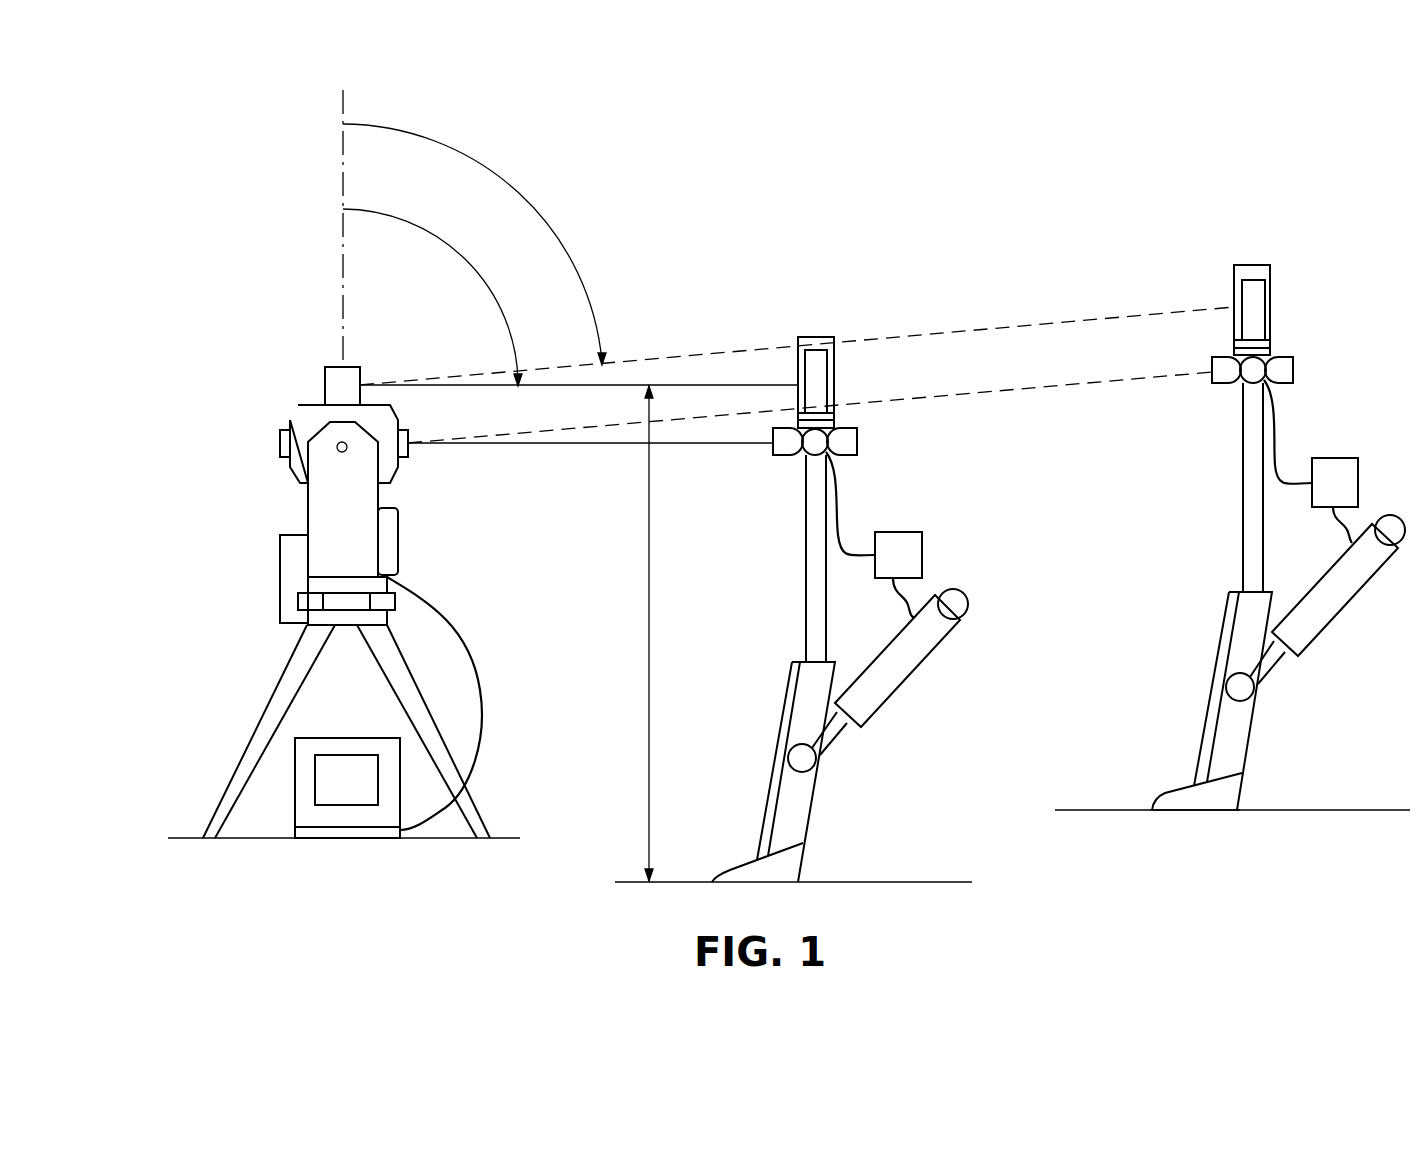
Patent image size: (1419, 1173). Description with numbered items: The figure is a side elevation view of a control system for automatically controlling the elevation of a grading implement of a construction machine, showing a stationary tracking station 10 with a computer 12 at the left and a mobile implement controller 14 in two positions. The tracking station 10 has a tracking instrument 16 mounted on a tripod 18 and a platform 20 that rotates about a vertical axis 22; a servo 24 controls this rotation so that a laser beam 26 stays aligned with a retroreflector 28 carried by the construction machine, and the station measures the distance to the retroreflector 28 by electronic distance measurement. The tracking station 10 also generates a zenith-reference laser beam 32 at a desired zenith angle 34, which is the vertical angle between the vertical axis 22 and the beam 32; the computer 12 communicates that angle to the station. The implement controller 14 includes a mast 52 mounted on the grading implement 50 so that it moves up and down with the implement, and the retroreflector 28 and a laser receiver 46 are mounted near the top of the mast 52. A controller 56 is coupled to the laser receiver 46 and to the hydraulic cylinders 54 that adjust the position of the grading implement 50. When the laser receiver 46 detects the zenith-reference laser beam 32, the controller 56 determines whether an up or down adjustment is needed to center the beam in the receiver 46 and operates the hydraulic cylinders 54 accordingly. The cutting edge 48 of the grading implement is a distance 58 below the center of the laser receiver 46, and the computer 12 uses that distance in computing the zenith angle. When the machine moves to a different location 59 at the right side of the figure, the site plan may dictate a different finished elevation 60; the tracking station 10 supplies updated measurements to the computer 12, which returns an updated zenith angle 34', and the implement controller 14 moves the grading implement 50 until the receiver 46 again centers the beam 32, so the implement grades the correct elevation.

The tracking station 10 is at (322, 464).
The computer 12 is at (362, 738).
The implement controller 14 is at (1035, 573).
The tracking instrument 16 is at (300, 512).
The tripod 18 is at (263, 712).
The platform 20 is at (384, 496).
The vertical axis 22 is at (343, 335).
The servo 24 is at (279, 562).
The laser beam 26 is at (580, 444).
The retroreflector 28 is at (785, 457).
The zenith-reference laser beam 32 is at (484, 386).
The zenith angle 34 is at (432, 297).
The updated zenith angle 34' is at (506, 244).
The laser receiver 46 is at (836, 380).
The cutting edge 48 is at (711, 880).
The grading implement 50 is at (813, 807).
The mast 52 is at (805, 593).
The hydraulic cylinders 54 is at (910, 678).
The controller 56 is at (923, 546).
The distance 58 is at (650, 702).
The different location 59 is at (1192, 820).
The finished elevation 60 is at (1272, 810).